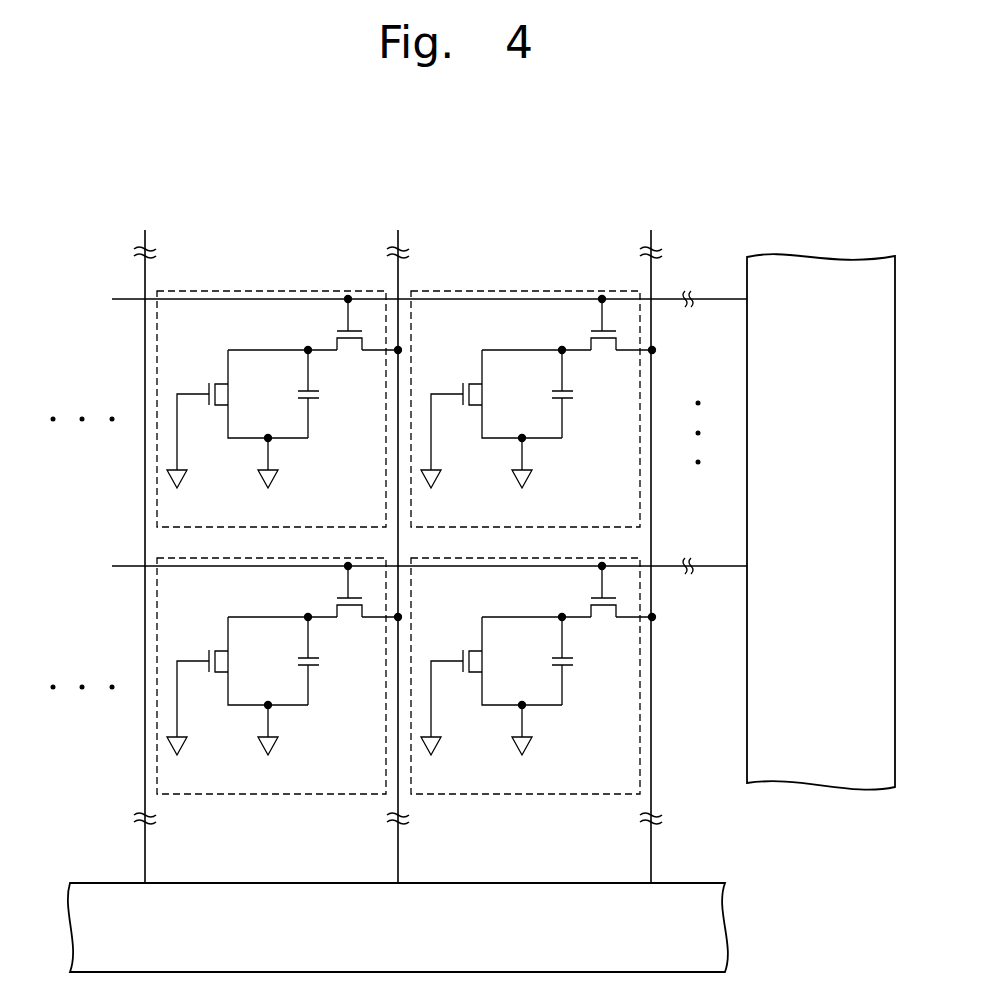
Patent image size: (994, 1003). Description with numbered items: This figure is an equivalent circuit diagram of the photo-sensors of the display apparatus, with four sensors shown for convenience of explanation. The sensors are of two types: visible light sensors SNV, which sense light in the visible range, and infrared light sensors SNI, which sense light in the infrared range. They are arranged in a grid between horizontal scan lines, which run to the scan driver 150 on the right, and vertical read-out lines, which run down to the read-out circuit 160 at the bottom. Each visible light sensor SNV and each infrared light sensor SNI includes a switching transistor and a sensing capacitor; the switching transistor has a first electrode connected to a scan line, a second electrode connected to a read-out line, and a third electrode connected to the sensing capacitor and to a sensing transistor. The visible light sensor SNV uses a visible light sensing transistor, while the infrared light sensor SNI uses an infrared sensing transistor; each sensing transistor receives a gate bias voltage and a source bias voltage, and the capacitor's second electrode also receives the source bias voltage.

The scan driver 150 is at (823, 790).
The read-out circuit 160 is at (727, 930).
The visible light sensor SNV is at (328, 291).
The infrared light sensor SNI is at (582, 291).